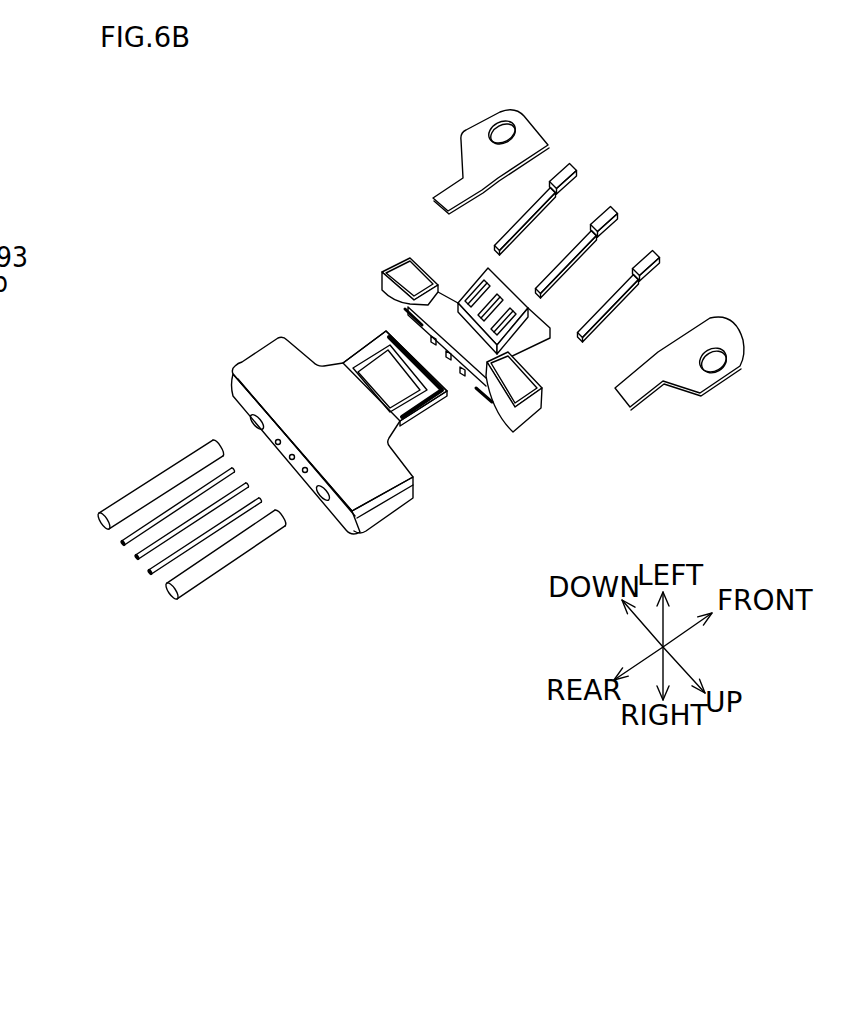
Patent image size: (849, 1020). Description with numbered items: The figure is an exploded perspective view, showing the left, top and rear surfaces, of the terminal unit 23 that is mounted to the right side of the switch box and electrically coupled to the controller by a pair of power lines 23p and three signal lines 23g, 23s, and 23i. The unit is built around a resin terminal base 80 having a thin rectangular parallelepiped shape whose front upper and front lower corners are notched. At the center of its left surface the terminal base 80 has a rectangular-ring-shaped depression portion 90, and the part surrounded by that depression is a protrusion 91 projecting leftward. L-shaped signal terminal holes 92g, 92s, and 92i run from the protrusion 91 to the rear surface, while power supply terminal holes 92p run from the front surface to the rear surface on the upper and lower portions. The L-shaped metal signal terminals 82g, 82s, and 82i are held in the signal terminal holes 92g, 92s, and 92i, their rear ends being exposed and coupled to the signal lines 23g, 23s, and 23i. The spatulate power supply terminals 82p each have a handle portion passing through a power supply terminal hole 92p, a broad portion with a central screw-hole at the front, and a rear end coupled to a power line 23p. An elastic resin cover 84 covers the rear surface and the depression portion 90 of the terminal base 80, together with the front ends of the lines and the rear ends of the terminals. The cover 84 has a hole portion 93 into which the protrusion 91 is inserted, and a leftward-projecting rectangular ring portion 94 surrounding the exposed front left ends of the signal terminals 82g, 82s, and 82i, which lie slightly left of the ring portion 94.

The terminal unit 23 is at (348, 133).
The power line 23p is at (110, 509).
The signal line 23i is at (123, 543).
The signal line 23s is at (137, 558).
The signal line 23g is at (150, 573).
The terminal base 80 is at (397, 263).
The power supply terminal 82p is at (527, 135).
The signal terminal 82i is at (573, 187).
The signal terminal 82s is at (620, 230).
The signal terminal 82g is at (657, 272).
The cover 84 is at (262, 368).
The depression portion 90 is at (530, 342).
The protrusion 91 is at (498, 295).
The power supply terminal hole 92p is at (402, 318).
The signal terminal hole 92i is at (478, 300).
The signal terminal hole 92s is at (450, 378).
The signal terminal hole 92g is at (465, 383).
The hole portion 93 is at (397, 383).
The ring portion 94 is at (350, 348).